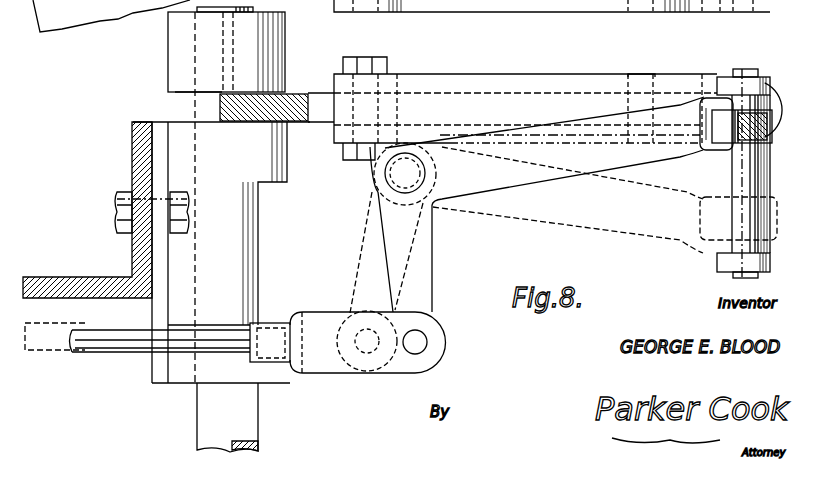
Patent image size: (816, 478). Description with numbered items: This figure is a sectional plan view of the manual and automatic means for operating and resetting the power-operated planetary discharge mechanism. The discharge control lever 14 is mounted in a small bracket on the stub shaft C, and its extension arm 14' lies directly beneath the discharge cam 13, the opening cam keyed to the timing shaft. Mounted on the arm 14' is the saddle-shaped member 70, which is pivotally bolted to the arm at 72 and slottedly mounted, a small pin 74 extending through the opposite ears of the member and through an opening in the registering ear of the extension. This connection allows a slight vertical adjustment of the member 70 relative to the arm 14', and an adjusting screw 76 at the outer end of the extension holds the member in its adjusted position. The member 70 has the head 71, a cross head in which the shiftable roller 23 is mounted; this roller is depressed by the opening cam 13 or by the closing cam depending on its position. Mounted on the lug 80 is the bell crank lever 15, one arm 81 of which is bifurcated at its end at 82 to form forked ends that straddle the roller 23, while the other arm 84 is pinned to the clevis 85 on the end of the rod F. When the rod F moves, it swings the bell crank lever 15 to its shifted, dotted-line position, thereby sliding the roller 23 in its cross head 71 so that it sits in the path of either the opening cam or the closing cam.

The discharge control lever 14 is at (218, 107).
The arm 14' is at (525, 73).
The saddle-shaped member 70 is at (542, 82).
The arm 81 is at (565, 135).
The pin 74 is at (645, 73).
The bifurcated end 82 is at (708, 100).
The adjusting screw 76 is at (778, 95).
The discharge cam 13 is at (753, 120).
The shiftable roller 23 is at (772, 138).
The head 71 is at (760, 187).
The pivot bolt 72 is at (365, 150).
The lug 80 is at (373, 180).
The bell crank lever 15 is at (573, 175).
The arm 84 is at (432, 298).
The clevis 85 is at (335, 373).
The rod F is at (125, 340).
The stub shaft C is at (255, 408).